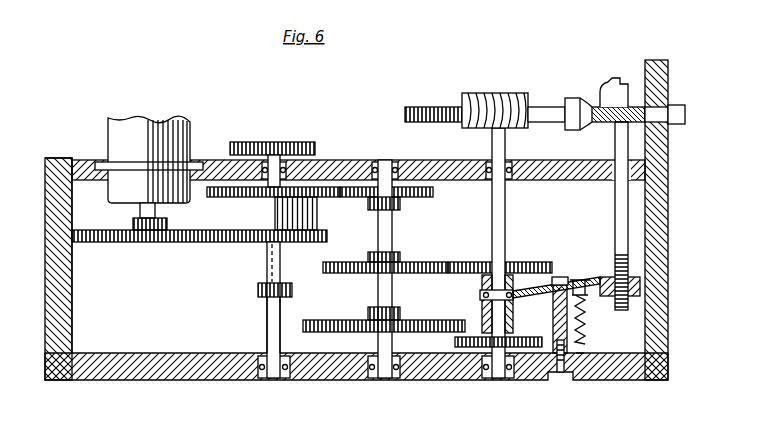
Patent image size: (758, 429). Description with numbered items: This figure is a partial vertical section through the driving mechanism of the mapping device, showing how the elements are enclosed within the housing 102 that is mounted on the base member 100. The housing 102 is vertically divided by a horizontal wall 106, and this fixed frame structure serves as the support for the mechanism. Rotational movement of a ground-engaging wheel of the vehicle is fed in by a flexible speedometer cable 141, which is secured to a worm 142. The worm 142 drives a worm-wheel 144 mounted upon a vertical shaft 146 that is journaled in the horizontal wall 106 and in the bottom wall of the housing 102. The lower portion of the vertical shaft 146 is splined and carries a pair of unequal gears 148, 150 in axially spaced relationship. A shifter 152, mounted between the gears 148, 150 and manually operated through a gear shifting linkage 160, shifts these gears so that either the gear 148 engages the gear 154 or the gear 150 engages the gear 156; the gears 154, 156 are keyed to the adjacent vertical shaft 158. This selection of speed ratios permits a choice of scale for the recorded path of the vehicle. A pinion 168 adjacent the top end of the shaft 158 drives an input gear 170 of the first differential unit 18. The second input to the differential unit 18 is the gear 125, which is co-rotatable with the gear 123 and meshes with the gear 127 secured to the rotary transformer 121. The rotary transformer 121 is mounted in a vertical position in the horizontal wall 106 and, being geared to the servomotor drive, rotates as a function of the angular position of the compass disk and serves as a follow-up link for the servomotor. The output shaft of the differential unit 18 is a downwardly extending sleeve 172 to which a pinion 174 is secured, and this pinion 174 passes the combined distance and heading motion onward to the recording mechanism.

The first differential unit 18 is at (317, 214).
The base member 100 is at (137, 380).
The housing 102 is at (668, 285).
The horizontal wall 106 is at (345, 161).
The rotary transformer 121 is at (190, 133).
The gear 123 is at (290, 141).
The gear 125 is at (265, 246).
The gear 127 is at (148, 243).
The flexible speedometer cable 141 is at (620, 80).
The worm 142 is at (515, 93).
The worm-wheel 144 is at (430, 107).
The vertical shaft 146 is at (506, 211).
The gear 148 is at (520, 262).
The gear 150 is at (510, 378).
The shifter 152 is at (510, 305).
The gear 154 is at (428, 259).
The gear 156 is at (415, 319).
The vertical shaft 158 is at (378, 292).
The gear shifting linkage 160 is at (634, 236).
The pinion 168 is at (433, 191).
The input gear 170 is at (207, 190).
The sleeve 172 is at (258, 279).
The pinion 174 is at (263, 300).